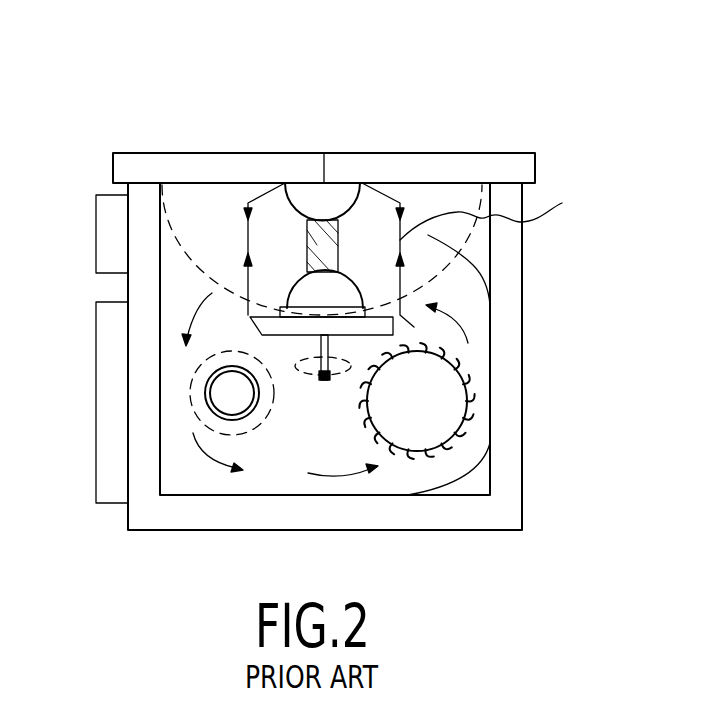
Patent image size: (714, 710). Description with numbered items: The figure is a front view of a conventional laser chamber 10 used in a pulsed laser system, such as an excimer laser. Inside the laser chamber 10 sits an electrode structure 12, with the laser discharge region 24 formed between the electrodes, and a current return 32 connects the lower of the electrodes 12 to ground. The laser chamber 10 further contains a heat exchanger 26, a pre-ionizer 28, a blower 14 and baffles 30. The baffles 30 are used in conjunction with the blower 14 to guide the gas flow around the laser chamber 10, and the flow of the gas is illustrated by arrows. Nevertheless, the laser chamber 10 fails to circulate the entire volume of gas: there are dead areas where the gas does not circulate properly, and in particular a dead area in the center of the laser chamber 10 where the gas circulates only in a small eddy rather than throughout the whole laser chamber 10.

The laser chamber 10 is at (535, 120).
The electrode structure 12 is at (340, 188).
The blower 14 is at (463, 367).
The laser discharge region 24 is at (307, 240).
The heat exchanger 26 is at (190, 393).
The pre-ionizer 28 is at (501, 203).
The baffles 30 is at (473, 265).
The current return 32 is at (180, 228).